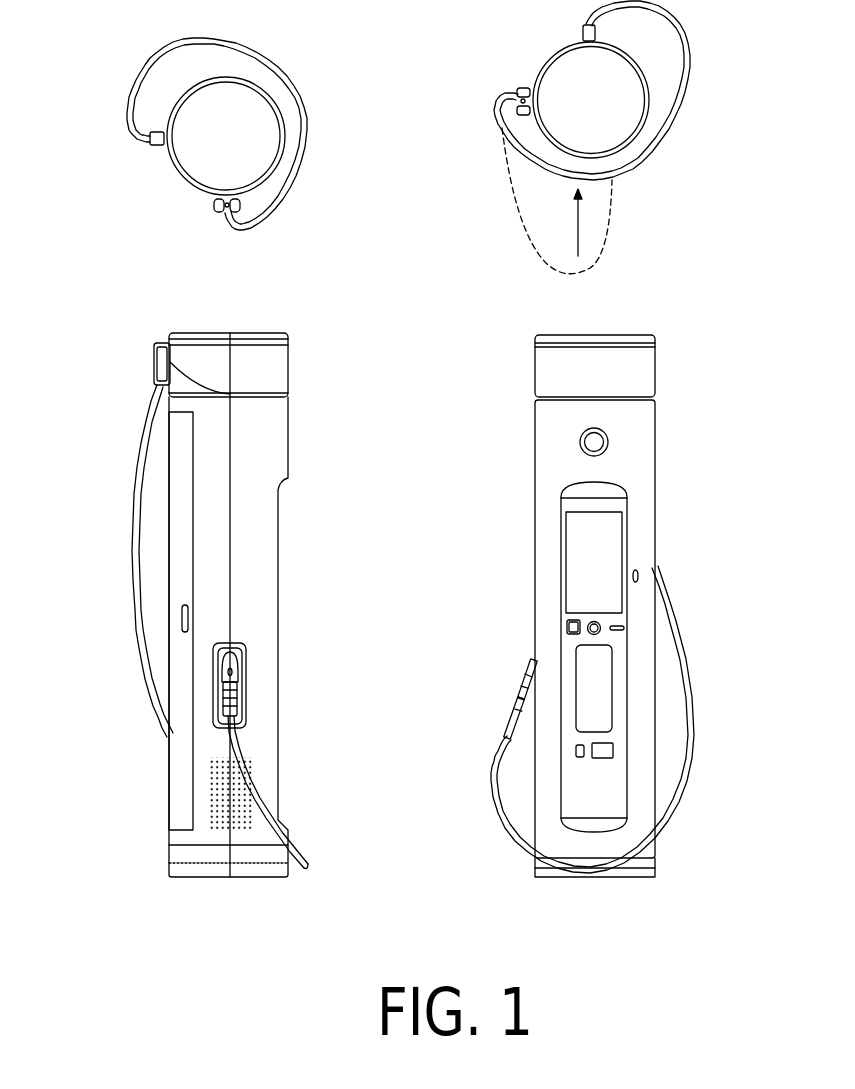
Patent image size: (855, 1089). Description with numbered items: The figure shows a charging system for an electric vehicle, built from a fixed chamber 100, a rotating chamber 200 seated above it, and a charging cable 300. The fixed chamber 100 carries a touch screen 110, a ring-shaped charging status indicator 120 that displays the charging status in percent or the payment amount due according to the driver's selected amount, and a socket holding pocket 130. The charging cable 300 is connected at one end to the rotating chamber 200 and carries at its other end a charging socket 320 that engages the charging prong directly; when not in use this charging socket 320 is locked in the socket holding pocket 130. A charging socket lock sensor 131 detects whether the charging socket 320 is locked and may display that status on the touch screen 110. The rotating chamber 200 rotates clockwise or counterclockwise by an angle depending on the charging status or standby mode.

The fixed chamber 100 is at (523, 465).
The touch screen 110 is at (612, 598).
The charging status indicator 120 is at (608, 443).
The socket holding pocket 130 is at (213, 681).
The charging socket lock sensor 131 is at (232, 647).
The rotating chamber 200 is at (162, 318).
The charging cable 300 is at (128, 98).
The charging socket 320 is at (222, 214).